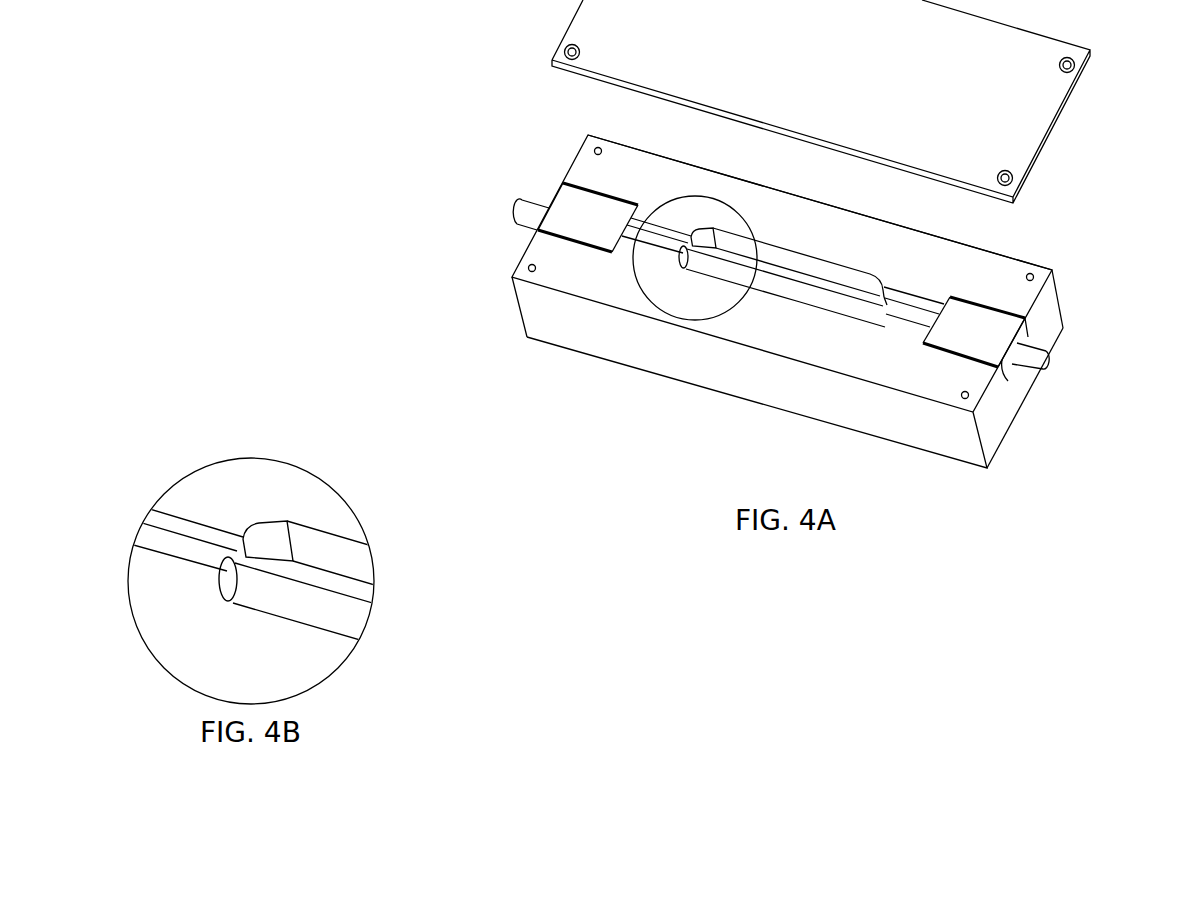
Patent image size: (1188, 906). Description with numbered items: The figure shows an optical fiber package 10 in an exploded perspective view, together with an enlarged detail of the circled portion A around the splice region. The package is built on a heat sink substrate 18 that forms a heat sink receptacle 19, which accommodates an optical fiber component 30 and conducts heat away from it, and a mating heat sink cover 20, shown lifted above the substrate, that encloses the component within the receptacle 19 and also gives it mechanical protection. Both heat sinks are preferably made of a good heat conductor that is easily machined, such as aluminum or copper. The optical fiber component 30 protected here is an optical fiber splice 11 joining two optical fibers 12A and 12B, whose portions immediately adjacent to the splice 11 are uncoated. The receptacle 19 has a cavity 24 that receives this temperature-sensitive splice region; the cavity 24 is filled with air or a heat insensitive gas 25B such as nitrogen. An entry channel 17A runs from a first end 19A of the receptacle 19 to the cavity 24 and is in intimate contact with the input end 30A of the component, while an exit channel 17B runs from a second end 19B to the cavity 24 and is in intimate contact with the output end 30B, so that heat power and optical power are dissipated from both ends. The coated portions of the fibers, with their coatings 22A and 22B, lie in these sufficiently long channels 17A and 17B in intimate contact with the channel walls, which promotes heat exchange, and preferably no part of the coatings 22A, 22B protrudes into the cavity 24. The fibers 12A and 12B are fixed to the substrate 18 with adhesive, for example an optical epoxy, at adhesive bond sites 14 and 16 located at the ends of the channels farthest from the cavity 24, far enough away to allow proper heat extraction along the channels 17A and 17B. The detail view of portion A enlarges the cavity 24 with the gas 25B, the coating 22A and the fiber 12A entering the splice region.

In FIG. 4A, the optical fiber package 10 is at (447, 144).
In FIG. 4A, the optical fiber splice 11 is at (782, 265).
In FIG. 4A, the first optical fiber 12A is at (722, 267).
In FIG. 4B, the first optical fiber 12A is at (353, 608).
In FIG. 4A, the second optical fiber 12B is at (852, 303).
In FIG. 4A, the adhesive bond site 14 is at (588, 217).
In FIG. 4A, the adhesive bond site 16 is at (980, 323).
In FIG. 4A, the entry channel 17A is at (643, 220).
In FIG. 4A, the exit channel 17B is at (932, 272).
In FIG. 4A, the heat sink substrate 18 is at (538, 312).
In FIG. 4A, the heat sink receptacle 19 is at (1045, 163).
In FIG. 4A, the first end of heat sink receptacle 19A is at (497, 275).
In FIG. 4A, the second end of heat sink receptacle 19B is at (1060, 289).
In FIG. 4A, the heat sink cover 20 is at (553, 61).
In FIG. 4A, the optical fiber coating 22A is at (652, 242).
In FIG. 4B, the optical fiber coating 22A is at (165, 547).
In FIG. 4A, the optical fiber coating 22B is at (915, 315).
In FIG. 4A, the cavity 24 is at (710, 230).
In FIG. 4B, the cavity 24 is at (268, 527).
In FIG. 4A, the heat insensitive gas 25B is at (745, 253).
In FIG. 4B, the heat insensitive gas 25B is at (315, 557).
In FIG. 4A, the optical fiber component 30 is at (815, 302).
In FIG. 4A, the input end of optical fiber component 30A is at (527, 213).
In FIG. 4A, the output end of optical fiber component 30B is at (1048, 335).
In FIG. 4A, the portion A is at (713, 197).